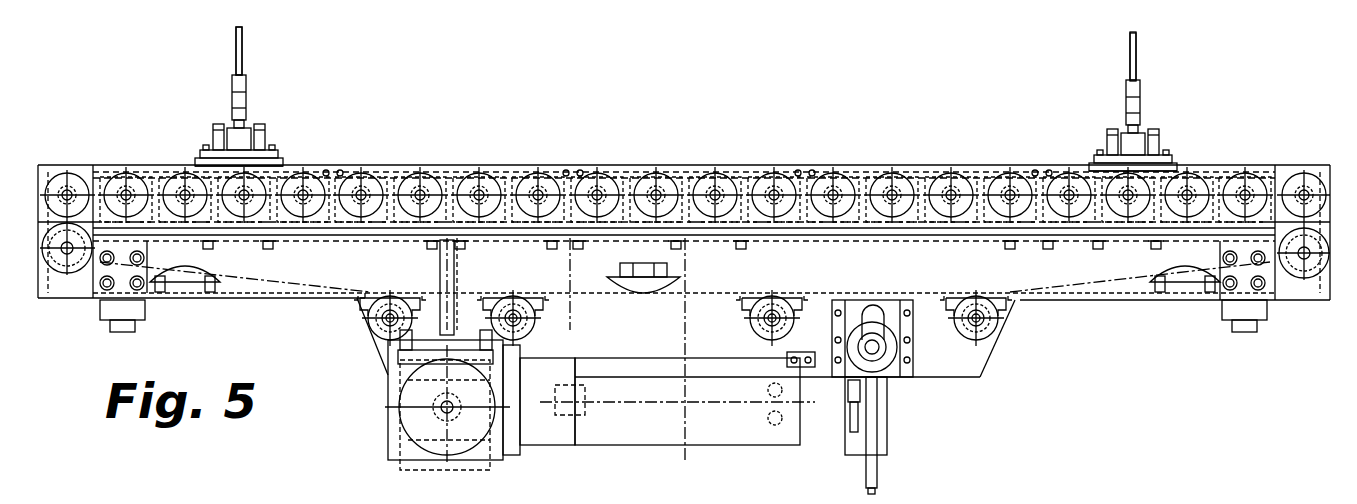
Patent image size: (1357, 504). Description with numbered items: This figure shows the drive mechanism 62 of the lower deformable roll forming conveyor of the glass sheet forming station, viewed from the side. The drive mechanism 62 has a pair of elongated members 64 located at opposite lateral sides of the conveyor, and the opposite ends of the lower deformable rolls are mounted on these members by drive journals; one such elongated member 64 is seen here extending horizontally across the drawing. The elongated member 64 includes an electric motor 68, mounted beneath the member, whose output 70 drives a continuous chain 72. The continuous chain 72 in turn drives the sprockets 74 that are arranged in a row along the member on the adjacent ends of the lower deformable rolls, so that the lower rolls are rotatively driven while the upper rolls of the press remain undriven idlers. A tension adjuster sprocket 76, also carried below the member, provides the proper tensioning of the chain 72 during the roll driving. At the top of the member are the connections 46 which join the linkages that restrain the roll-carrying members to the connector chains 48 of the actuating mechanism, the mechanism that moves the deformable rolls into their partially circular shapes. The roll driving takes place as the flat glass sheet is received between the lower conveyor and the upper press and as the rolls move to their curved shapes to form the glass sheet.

The connection 46 is at (236, 80).
The connector chain 48 is at (236, 40).
The drive mechanism 62 is at (992, 160).
The elongated member 64 is at (1097, 300).
The electric motor 68 is at (645, 433).
The output 70 is at (440, 412).
The continuous chain 72 is at (310, 172).
The sprocket 74 is at (370, 178).
The tension adjuster sprocket 76 is at (966, 320).